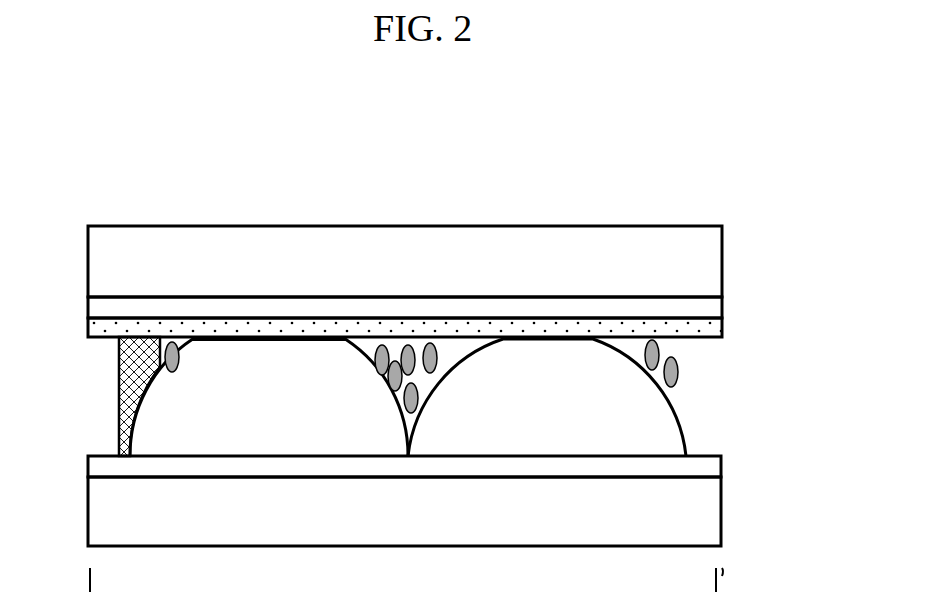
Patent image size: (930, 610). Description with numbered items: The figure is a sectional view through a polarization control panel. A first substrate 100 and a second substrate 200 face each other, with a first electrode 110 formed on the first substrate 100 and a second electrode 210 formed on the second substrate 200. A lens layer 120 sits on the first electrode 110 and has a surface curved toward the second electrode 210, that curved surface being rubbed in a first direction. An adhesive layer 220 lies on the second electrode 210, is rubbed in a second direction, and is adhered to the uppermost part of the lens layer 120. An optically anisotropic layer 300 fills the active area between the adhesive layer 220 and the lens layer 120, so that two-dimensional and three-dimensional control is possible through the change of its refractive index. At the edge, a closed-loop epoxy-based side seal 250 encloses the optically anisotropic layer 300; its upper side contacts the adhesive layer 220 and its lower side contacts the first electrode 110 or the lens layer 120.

The first substrate 100 is at (706, 513).
The first electrode 110 is at (723, 465).
The lens layer 120 is at (622, 430).
The second substrate 200 is at (722, 280).
The second electrode 210 is at (722, 311).
The adhesive layer 220 is at (722, 337).
The side seal 250 is at (137, 392).
The optically anisotropic layer 300 is at (438, 360).